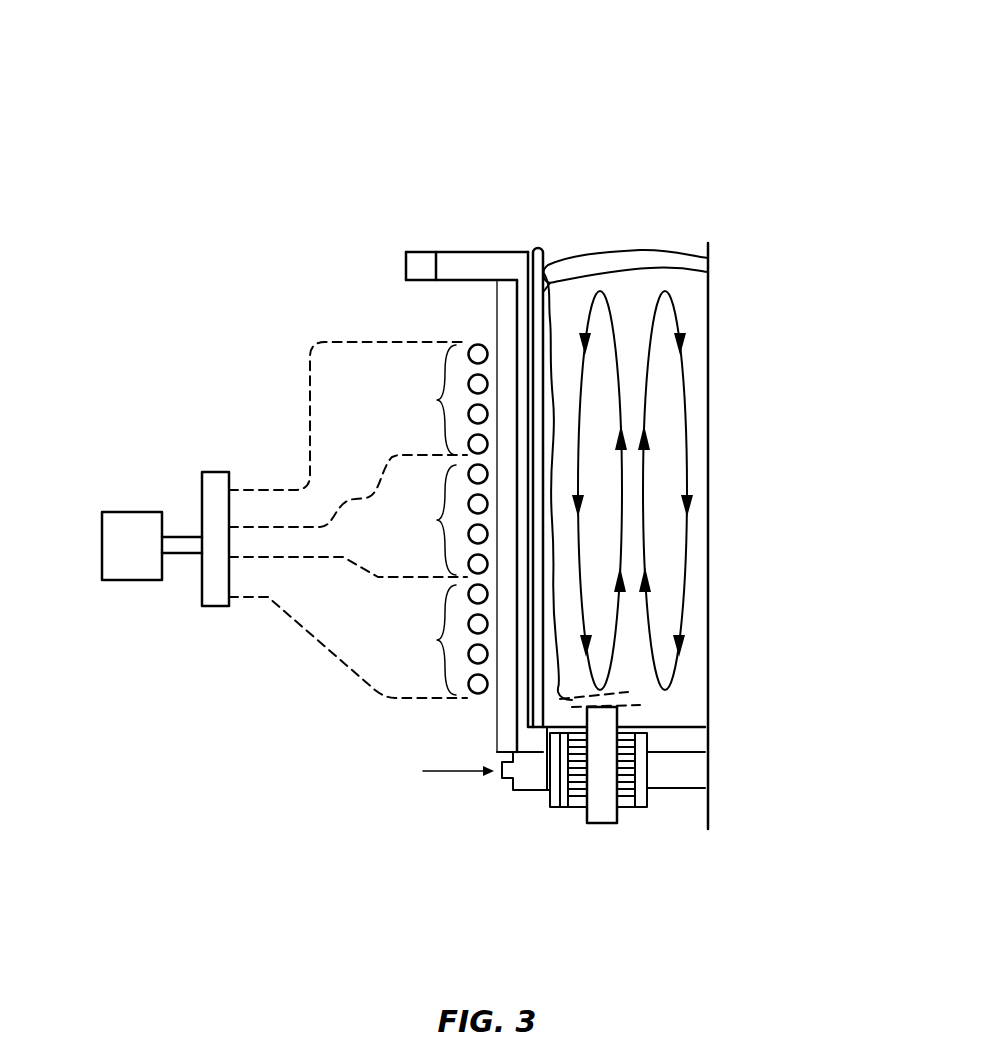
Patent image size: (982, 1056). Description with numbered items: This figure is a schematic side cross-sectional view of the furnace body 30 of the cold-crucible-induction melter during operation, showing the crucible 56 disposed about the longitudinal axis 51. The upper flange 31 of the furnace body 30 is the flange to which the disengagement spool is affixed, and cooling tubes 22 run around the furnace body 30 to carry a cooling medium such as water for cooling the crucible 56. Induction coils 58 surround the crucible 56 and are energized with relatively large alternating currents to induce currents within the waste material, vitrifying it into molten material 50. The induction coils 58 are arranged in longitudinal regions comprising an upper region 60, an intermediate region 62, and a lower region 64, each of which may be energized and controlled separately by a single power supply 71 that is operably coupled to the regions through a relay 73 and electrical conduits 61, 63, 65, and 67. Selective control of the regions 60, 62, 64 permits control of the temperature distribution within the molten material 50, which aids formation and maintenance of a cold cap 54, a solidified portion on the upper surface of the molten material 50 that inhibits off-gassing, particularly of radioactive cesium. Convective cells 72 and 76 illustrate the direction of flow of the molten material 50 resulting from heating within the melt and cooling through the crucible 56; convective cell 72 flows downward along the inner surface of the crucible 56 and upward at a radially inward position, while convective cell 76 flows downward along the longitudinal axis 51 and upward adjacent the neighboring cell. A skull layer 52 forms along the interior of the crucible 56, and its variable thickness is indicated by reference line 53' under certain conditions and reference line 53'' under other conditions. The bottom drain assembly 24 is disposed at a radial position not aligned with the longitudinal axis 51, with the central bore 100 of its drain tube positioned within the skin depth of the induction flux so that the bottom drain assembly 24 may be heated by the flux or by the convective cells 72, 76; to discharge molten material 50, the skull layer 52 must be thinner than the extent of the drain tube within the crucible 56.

The furnace body 30 is at (788, 120).
The crucible 56 is at (470, 262).
The upper flange 31 is at (406, 266).
The cooling tubes 22 is at (503, 718).
The induction coils 58 is at (443, 495).
The upper region 60 is at (443, 400).
The intermediate region 62 is at (443, 520).
The lower region 64 is at (443, 640).
The electrical conduit 61 is at (311, 400).
The electrical conduit 63 is at (388, 460).
The electrical conduit 65 is at (380, 578).
The electrical conduit 67 is at (330, 652).
The relay 73 is at (212, 492).
The power supply 71 is at (132, 546).
The skull layer 52 is at (538, 272).
The molten material 50 is at (563, 315).
The cold cap 54 is at (623, 262).
The convective cell 72 is at (617, 317).
The convective cell 76 is at (683, 403).
The longitudinal axis 51 is at (710, 322).
The reference line 53' is at (667, 685).
The reference line 53'' is at (677, 716).
The bottom drain assembly 24 is at (543, 813).
The central bore 100 is at (599, 814).